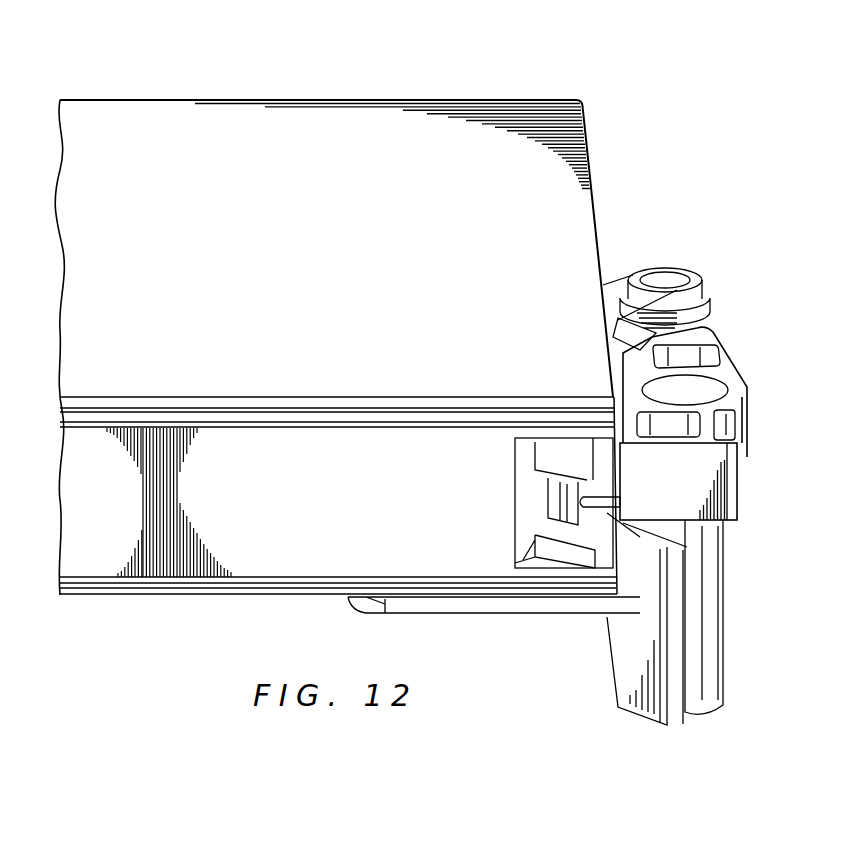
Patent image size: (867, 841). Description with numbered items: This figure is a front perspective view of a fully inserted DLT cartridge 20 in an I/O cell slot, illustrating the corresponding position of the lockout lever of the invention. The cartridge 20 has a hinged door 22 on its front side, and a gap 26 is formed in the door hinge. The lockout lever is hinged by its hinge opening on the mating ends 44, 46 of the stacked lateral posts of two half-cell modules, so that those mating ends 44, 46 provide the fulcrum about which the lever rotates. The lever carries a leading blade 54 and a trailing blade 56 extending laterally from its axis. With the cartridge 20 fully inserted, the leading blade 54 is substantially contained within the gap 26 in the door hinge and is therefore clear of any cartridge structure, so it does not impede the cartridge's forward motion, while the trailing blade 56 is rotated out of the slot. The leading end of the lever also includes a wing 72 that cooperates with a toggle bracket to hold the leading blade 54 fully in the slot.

The DLT format cartridge 20 is at (229, 96).
The hinged door 22 is at (258, 568).
The gap 26 is at (587, 516).
The mating end 44 is at (670, 276).
The mating end 46 is at (707, 710).
The leading blade 54 is at (598, 487).
The trailing blade 56 is at (623, 320).
The wing 72 is at (741, 498).